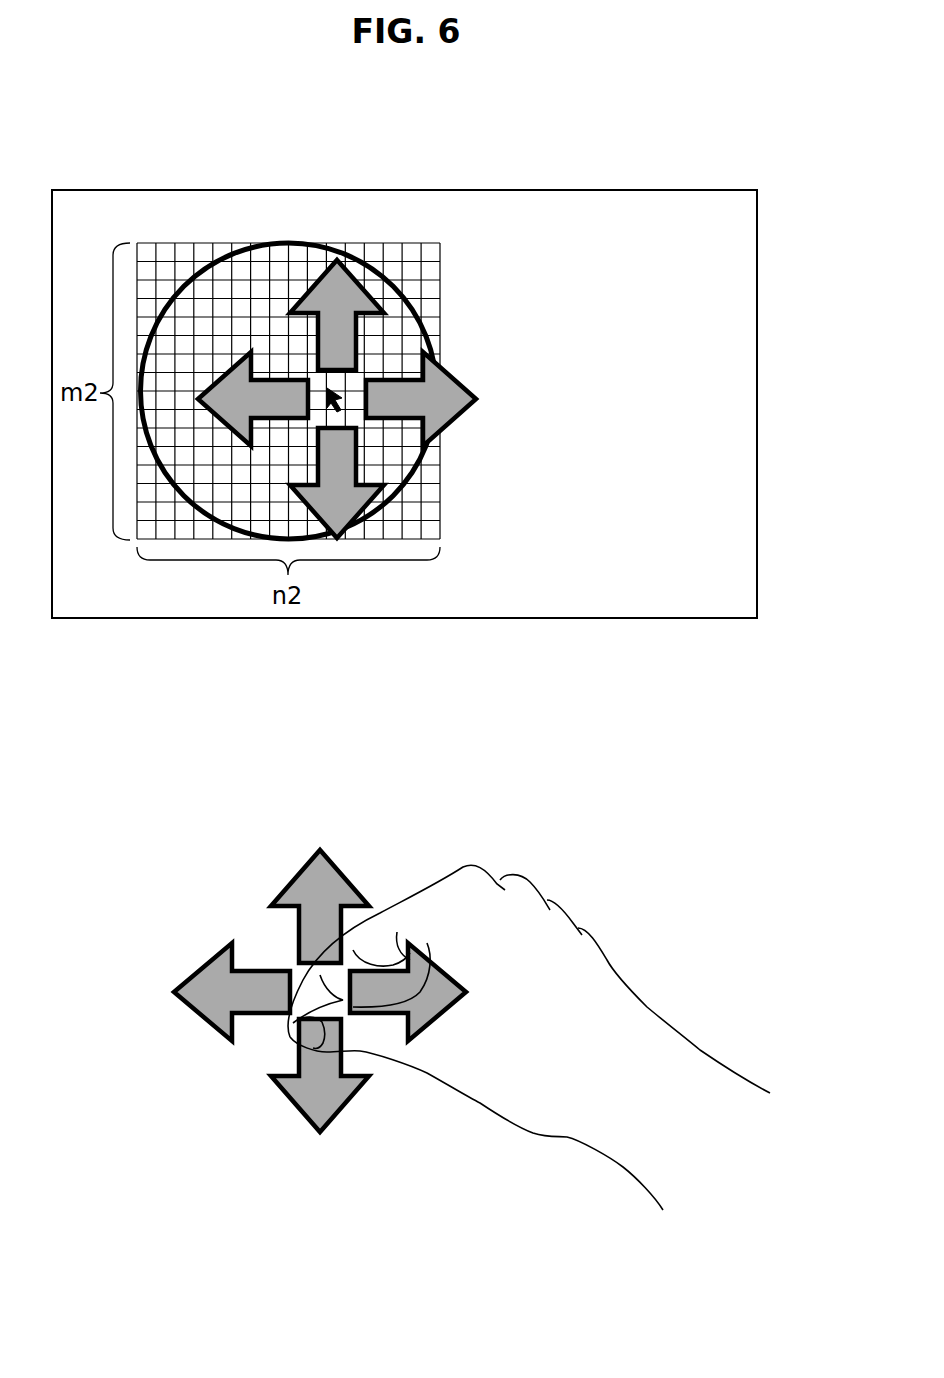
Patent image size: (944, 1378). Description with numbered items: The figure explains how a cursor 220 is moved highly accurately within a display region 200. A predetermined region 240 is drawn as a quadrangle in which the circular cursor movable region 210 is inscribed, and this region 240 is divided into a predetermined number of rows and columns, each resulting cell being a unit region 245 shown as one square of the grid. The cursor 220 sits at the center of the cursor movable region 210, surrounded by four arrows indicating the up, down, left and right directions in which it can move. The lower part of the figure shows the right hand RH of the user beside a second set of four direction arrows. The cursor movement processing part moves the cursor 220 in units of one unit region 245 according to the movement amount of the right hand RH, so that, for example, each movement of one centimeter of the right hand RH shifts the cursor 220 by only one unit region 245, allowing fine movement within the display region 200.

The display region 200 is at (225, 190).
The unit region 245 is at (165, 250).
The cursor movable region 210 is at (360, 262).
The predetermined region 240 is at (410, 243).
The cursor 220 is at (327, 390).
The right hand RH is at (627, 1020).